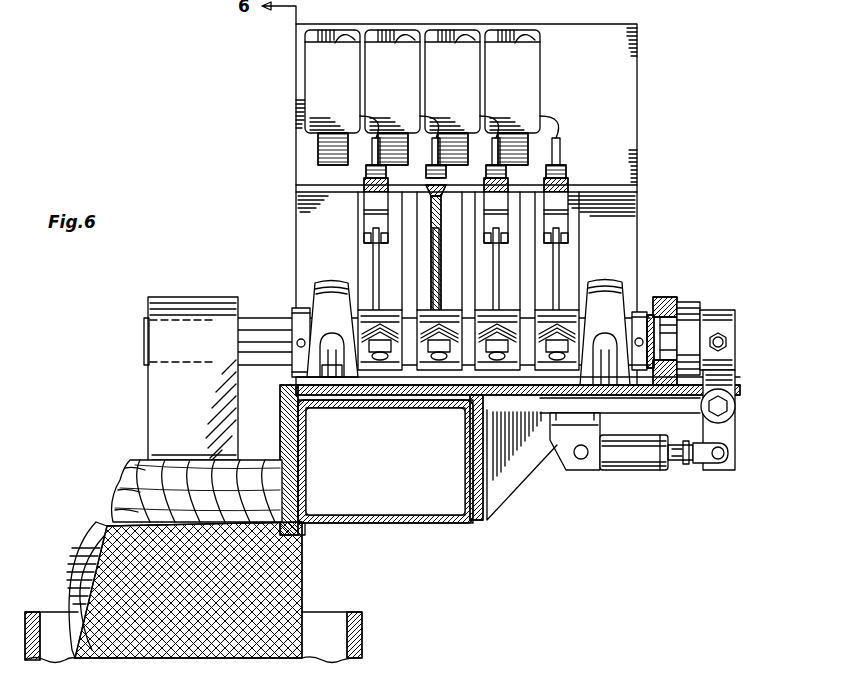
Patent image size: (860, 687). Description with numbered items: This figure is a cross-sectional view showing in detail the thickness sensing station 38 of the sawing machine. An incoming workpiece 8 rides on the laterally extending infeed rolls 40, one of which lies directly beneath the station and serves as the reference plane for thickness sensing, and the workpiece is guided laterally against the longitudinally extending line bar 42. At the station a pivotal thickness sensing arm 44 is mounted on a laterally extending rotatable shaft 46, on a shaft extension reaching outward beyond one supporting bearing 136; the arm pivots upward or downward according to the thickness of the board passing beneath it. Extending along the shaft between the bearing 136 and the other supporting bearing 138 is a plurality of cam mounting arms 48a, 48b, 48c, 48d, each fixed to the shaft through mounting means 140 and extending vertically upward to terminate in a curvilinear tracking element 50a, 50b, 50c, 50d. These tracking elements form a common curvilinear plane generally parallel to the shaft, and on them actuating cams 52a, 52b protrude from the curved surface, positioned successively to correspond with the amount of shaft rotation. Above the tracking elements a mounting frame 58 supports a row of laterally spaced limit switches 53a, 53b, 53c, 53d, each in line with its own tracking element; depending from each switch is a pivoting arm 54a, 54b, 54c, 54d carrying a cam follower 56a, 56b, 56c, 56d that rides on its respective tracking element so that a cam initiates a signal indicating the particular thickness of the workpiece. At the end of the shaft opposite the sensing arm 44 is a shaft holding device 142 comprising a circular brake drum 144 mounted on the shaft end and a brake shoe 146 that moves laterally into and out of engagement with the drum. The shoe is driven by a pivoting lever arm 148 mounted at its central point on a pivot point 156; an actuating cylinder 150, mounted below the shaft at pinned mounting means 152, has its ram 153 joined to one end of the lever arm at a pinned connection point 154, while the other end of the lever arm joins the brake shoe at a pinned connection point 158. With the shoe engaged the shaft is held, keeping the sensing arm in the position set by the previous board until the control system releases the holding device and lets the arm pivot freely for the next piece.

The workpiece 8 is at (125, 478).
The sensing station 38 is at (112, 347).
The infeed rolls 40 is at (82, 562).
The line bar 42 is at (298, 445).
The thickness sensing arm 44 is at (148, 407).
The rotatable shaft 46 is at (268, 357).
The cam mounting arm 48a is at (373, 240).
The cam mounting arm 48b is at (431, 254).
The cam mounting arm 48c is at (493, 262).
The cam mounting arm 48d is at (552, 256).
The curvilinear tracking element 50a is at (364, 184).
The curvilinear tracking element 50b is at (431, 190).
The curvilinear tracking element 50c is at (490, 220).
The curvilinear tracking element 50d is at (546, 216).
The actuating cam 52a is at (364, 200).
The actuating cam 52b is at (484, 200).
The limit switch 53a is at (340, 30).
The limit switch 53b is at (400, 30).
The limit switch 53c is at (460, 30).
The limit switch 53d is at (518, 30).
The pivoting arm 54a is at (356, 114).
The pivoting arm 54b is at (416, 114).
The pivoting arm 54c is at (476, 114).
The pivoting arm 54d is at (534, 114).
The cam follower 56a is at (384, 172).
The cam follower 56b is at (444, 172).
The cam follower 56c is at (504, 172).
The cam follower 56d is at (564, 172).
The mounting frame 58 is at (637, 226).
The supporting bearing 136 is at (322, 286).
The supporting bearing 138 is at (622, 290).
The mounting means 140 is at (386, 312).
The shaft holding device 142 is at (743, 315).
The brake drum 144 is at (680, 297).
The brake shoe 146 is at (722, 338).
The lever arm 148 is at (735, 387).
The actuating cylinder 150 is at (632, 472).
The pinned mounting means 152 is at (582, 472).
The ram 153 is at (680, 465).
The pinned connection point 154 is at (732, 455).
The pivot point 156 is at (735, 409).
The pinned connection point 158 is at (728, 348).